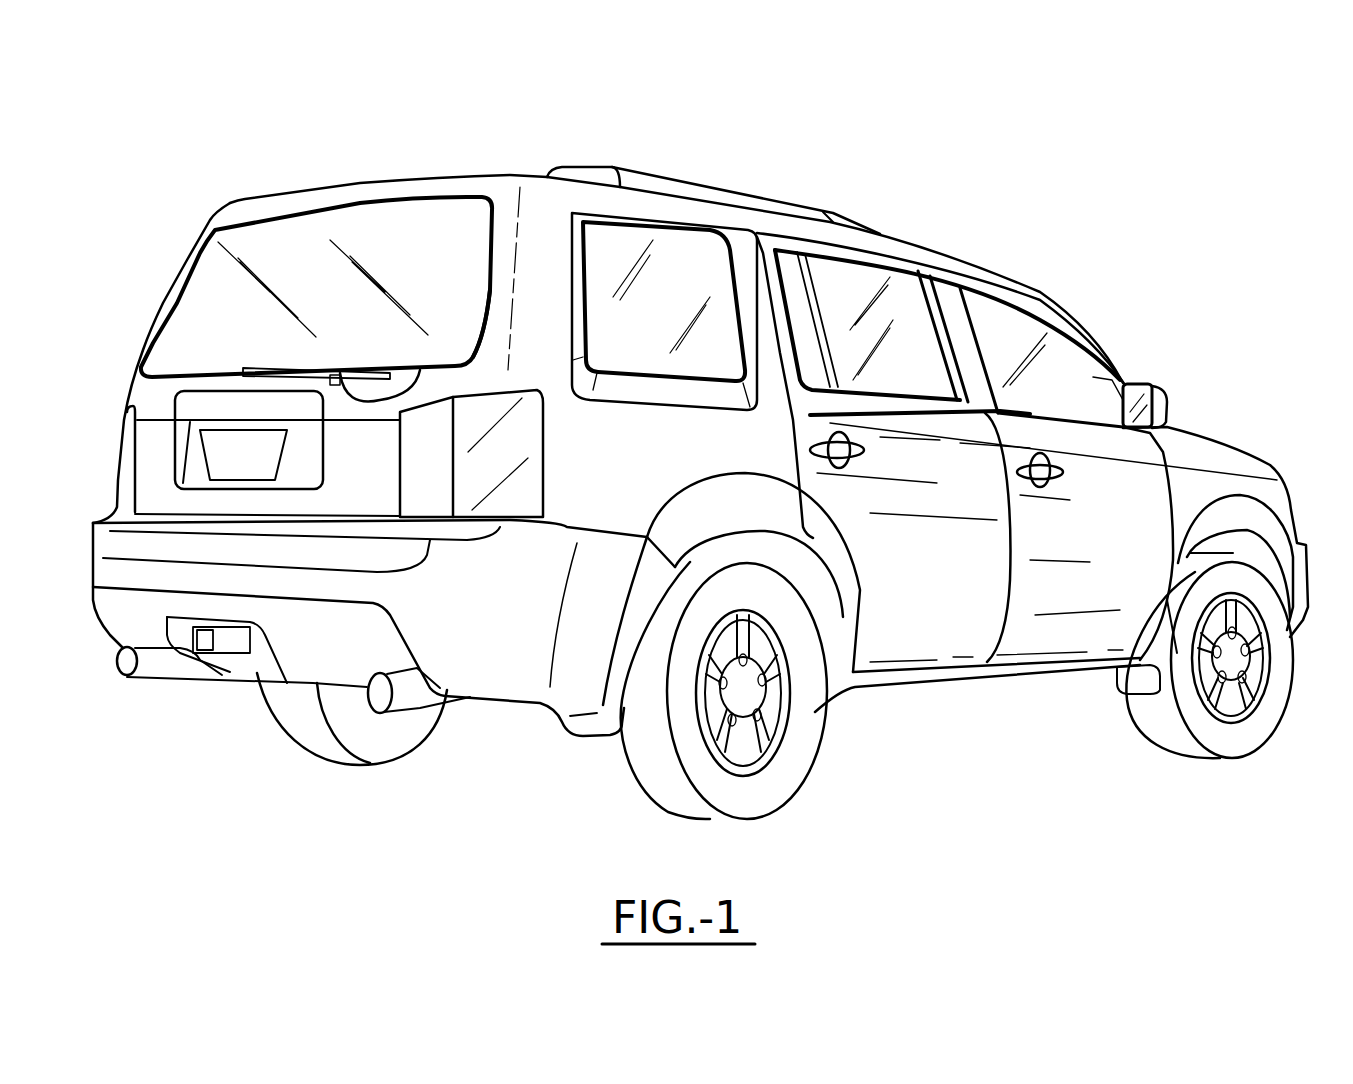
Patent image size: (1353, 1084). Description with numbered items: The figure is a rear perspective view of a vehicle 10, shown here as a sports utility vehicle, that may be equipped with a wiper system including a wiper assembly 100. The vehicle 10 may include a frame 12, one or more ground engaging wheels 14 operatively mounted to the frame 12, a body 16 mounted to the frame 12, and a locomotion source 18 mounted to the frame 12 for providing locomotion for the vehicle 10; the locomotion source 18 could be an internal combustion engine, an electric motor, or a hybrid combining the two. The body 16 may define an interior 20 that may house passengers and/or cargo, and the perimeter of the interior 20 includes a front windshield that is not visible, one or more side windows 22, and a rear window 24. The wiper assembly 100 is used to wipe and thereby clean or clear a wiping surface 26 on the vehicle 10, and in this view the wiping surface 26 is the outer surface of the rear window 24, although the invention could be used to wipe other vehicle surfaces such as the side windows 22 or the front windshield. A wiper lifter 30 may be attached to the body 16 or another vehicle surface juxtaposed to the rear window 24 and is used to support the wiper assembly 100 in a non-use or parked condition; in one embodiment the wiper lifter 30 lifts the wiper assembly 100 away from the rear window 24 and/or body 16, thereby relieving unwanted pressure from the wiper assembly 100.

The wiper assembly 100 is at (130, 225).
The vehicle 10 is at (858, 178).
The frame 12 is at (943, 677).
The ground engaging wheels 14 is at (1273, 700).
The body 16 is at (877, 258).
The locomotion source 18 is at (1215, 408).
The interior 20 is at (683, 278).
The side windows 22 is at (907, 340).
The rear window 24 is at (440, 223).
The wiping surface 26 is at (342, 300).
The wiper lifter 30 is at (437, 330).